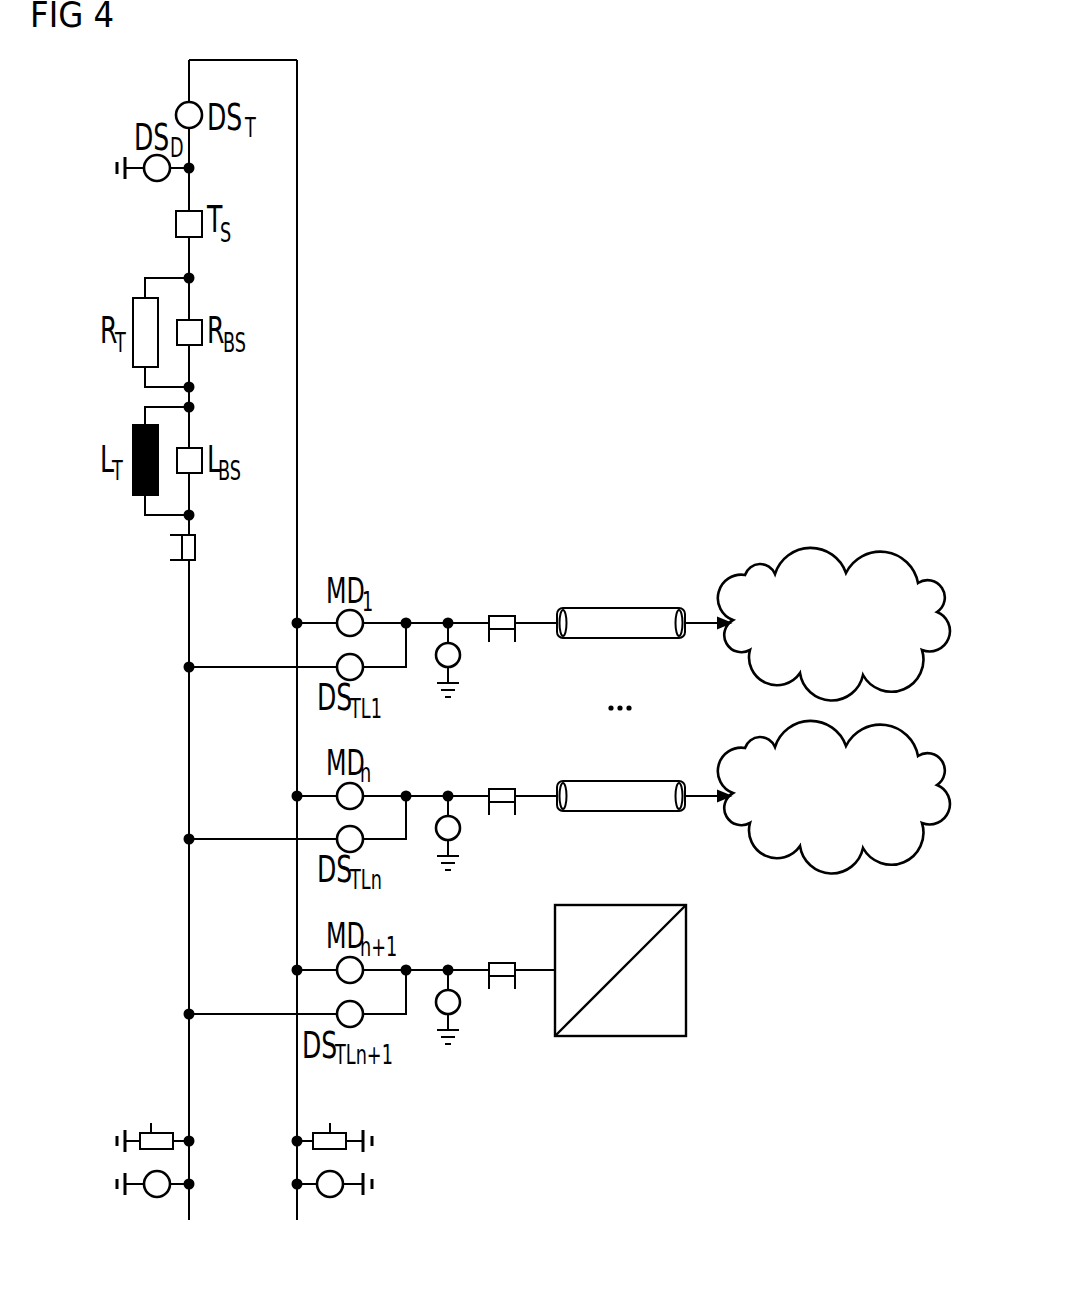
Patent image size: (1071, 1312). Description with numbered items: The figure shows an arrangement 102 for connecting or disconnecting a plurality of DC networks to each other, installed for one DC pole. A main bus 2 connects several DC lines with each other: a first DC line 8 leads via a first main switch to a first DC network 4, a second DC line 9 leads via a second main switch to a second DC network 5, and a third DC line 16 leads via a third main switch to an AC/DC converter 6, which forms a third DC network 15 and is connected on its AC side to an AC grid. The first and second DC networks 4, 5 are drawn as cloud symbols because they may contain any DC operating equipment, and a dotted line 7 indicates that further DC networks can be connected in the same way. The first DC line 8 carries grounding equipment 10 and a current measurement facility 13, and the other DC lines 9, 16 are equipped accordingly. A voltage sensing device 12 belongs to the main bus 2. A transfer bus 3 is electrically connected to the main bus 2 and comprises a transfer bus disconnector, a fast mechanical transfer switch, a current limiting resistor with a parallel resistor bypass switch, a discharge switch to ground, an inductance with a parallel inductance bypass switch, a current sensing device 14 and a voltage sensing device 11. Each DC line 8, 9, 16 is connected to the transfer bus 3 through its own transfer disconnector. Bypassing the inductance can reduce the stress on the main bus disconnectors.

The main bus 2 is at (299, 100).
The transfer bus 3 is at (189, 1078).
The arrangement 102 is at (644, 110).
The current sensing device 14 is at (197, 548).
The current measurement facility 13 is at (496, 612).
The first DC line 8 is at (617, 606).
The dotted line 7 is at (618, 700).
The first DC network 4 is at (847, 642).
The grounding equipment 10 is at (460, 657).
The second DC line 9 is at (622, 813).
The second DC network 5 is at (847, 815).
The third DC line 16 is at (533, 975).
The AC/DC converter 6 is at (622, 1038).
The third DC network 15 is at (735, 1020).
The voltage sensing device 11 is at (105, 1163).
The voltage sensing device 12 is at (390, 1163).